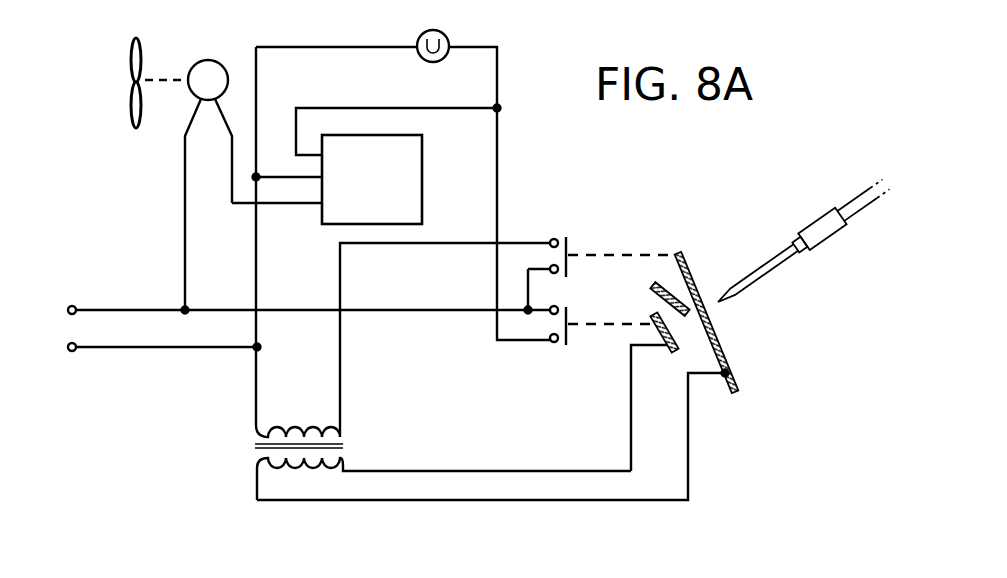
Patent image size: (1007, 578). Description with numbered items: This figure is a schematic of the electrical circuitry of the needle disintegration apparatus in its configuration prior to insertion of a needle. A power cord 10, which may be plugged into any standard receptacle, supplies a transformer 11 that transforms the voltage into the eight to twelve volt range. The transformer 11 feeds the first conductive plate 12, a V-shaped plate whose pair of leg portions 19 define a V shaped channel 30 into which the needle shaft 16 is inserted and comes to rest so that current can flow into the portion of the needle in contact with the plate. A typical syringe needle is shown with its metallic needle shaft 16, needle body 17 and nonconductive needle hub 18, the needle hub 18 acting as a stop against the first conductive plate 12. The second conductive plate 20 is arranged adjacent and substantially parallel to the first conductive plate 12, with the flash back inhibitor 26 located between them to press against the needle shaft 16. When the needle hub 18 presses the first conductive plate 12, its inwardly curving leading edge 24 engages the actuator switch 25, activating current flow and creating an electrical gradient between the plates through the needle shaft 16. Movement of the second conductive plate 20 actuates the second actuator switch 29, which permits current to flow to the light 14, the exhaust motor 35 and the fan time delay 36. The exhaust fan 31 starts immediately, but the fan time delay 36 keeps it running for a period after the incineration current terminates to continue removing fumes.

The power cord 10 is at (89, 357).
The transformer 11 is at (250, 451).
The first conductive plate 12 is at (733, 337).
The light 14 is at (422, 60).
The needle shaft 16 is at (772, 272).
The needle body 17 is at (840, 218).
The needle hub 18 is at (797, 243).
The leg portions 19 is at (695, 258).
The second conductive plate 20 is at (670, 354).
The inwardly curving leading edge 24 is at (674, 248).
The actuator switch 25 is at (553, 236).
The flash back inhibitor 26 is at (653, 290).
The second actuator switch 29 is at (565, 345).
The V shaped channel 30 is at (710, 293).
The exhaust fan 31 is at (115, 121).
The exhaust motor 35 is at (197, 71).
The fan time delay 36 is at (413, 170).